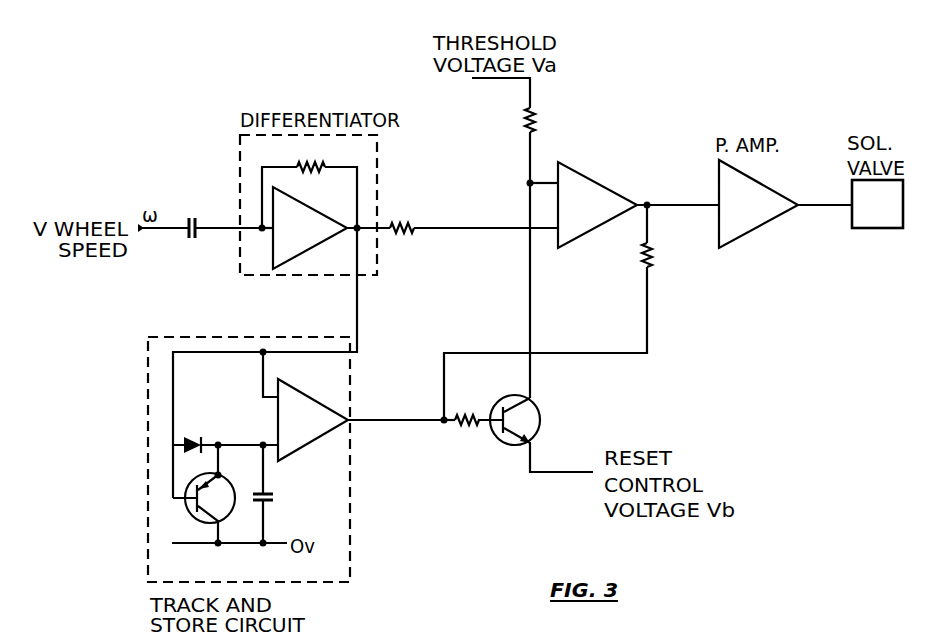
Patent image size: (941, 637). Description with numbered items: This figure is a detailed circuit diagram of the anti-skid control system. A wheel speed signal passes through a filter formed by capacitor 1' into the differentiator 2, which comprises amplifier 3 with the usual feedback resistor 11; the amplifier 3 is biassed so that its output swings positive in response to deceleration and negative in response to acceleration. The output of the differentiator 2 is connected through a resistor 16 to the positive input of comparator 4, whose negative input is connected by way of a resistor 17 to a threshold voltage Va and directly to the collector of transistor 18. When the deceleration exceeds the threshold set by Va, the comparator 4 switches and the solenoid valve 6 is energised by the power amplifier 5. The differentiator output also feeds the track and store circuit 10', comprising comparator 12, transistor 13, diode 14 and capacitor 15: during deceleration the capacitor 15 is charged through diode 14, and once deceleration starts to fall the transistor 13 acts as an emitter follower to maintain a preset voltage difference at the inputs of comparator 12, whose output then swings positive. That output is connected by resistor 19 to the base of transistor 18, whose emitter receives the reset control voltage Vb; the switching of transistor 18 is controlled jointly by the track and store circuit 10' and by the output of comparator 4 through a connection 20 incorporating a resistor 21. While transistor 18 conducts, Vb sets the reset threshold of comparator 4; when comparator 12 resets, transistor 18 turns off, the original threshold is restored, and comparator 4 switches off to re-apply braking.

The capacitor 1' is at (180, 247).
The differentiator 2 is at (240, 163).
The amplifier 3 is at (298, 239).
The comparator 4 is at (591, 216).
The power amplifier 5 is at (752, 216).
The solenoid valve 6 is at (884, 219).
The track and store circuit 10' is at (214, 464).
The feedback resistor 11 is at (315, 171).
The comparator 12 is at (315, 431).
The transistor 13 is at (222, 509).
The diode 14 is at (198, 430).
The capacitor 15 is at (274, 495).
The resistor 16 is at (405, 238).
The resistor 17 is at (537, 122).
The transistor 18 is at (540, 409).
The resistor 19 is at (474, 431).
The connection 20 is at (599, 355).
The resistor 21 is at (641, 256).